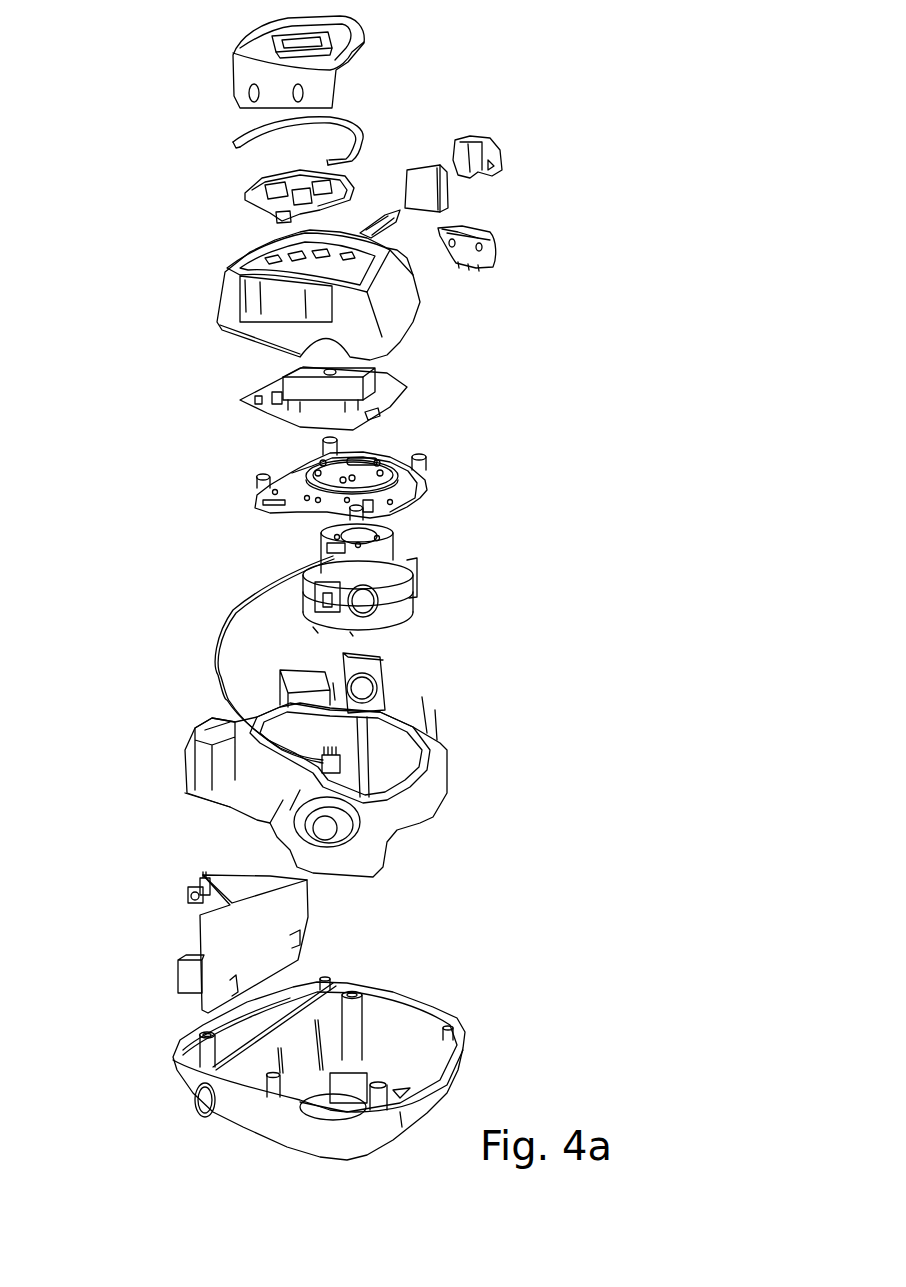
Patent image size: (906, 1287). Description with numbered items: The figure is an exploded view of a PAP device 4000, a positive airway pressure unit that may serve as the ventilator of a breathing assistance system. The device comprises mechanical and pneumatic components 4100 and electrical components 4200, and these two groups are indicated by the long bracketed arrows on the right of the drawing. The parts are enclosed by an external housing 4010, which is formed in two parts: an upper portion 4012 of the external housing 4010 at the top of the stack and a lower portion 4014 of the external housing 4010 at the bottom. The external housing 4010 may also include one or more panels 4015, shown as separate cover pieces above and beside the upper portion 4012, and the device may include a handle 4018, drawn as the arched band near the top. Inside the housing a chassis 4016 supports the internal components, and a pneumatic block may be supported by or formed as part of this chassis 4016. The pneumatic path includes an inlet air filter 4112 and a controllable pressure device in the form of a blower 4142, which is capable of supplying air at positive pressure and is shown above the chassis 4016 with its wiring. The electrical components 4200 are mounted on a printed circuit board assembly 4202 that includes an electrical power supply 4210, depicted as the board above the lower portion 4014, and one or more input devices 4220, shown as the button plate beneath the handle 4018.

The PAP device 4000 is at (512, 97).
The panel 4015 is at (232, 55).
The handle 4018 is at (232, 144).
The input device 4220 is at (243, 197).
The inlet air filter 4112 is at (432, 163).
The upper portion of the external housing 4012 is at (220, 298).
The printed circuit board assembly 4202 is at (235, 400).
The blower 4142 is at (325, 550).
The chassis 4016 is at (188, 760).
The electrical power supply 4210 is at (202, 940).
The lower portion of the external housing 4014 is at (189, 1100).
The mechanical and pneumatic components 4100 is at (445, 838).
The electrical components 4200 is at (328, 925).
The external housing 4010 is at (493, 1000).